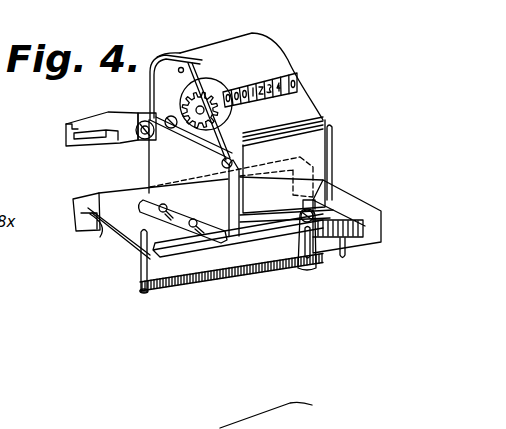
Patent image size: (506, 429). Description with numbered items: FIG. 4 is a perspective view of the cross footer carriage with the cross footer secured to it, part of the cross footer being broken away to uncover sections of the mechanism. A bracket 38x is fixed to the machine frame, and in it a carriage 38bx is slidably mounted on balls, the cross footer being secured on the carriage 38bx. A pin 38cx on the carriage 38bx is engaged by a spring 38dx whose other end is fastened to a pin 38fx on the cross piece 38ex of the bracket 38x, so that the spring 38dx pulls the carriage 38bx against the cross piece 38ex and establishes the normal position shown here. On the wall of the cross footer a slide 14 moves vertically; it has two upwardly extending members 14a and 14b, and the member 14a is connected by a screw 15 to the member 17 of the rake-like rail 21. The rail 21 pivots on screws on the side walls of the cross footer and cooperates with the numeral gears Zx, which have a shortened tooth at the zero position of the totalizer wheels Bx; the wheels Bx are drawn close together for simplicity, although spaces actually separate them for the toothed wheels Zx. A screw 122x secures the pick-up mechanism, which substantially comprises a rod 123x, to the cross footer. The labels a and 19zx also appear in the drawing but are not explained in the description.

The counter housing a is at (307, 112).
The totalizer wheels Bx is at (237, 87).
The upwardly extending member 14b is at (334, 162).
The numeral gears Zx is at (198, 112).
The bracket clamp screw 19zx is at (162, 105).
The member of the rake-like rail 17 is at (200, 140).
The rake-like rail 21 is at (180, 69).
The screw 15 is at (222, 163).
The upwardly extending member 14a is at (230, 195).
The screw 122x is at (143, 119).
The rod 123x is at (67, 124).
The bracket 38x is at (75, 219).
The carriage 38bx is at (132, 220).
The cross piece 38ex is at (358, 203).
The pin 38fx is at (347, 245).
The pin 38cx is at (140, 282).
The spring 38dx is at (215, 280).
The slide 14 is at (301, 270).